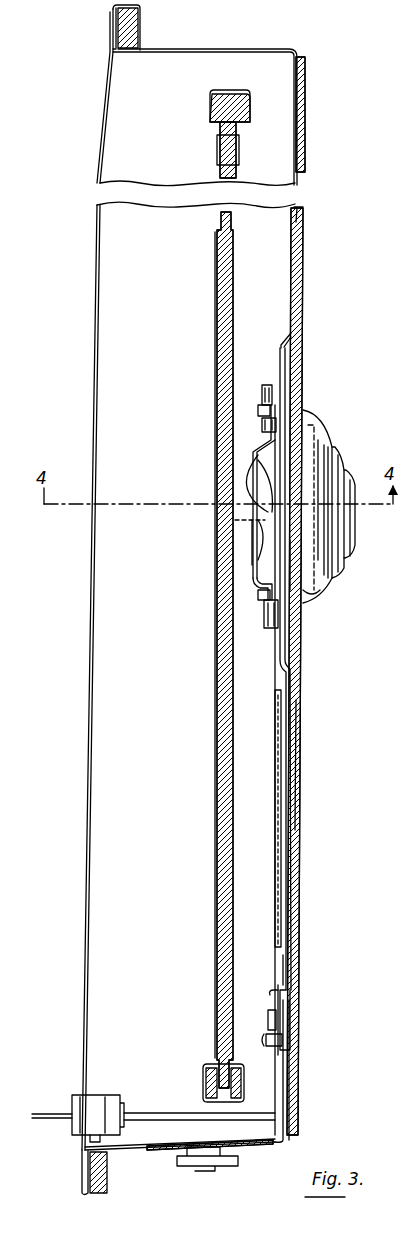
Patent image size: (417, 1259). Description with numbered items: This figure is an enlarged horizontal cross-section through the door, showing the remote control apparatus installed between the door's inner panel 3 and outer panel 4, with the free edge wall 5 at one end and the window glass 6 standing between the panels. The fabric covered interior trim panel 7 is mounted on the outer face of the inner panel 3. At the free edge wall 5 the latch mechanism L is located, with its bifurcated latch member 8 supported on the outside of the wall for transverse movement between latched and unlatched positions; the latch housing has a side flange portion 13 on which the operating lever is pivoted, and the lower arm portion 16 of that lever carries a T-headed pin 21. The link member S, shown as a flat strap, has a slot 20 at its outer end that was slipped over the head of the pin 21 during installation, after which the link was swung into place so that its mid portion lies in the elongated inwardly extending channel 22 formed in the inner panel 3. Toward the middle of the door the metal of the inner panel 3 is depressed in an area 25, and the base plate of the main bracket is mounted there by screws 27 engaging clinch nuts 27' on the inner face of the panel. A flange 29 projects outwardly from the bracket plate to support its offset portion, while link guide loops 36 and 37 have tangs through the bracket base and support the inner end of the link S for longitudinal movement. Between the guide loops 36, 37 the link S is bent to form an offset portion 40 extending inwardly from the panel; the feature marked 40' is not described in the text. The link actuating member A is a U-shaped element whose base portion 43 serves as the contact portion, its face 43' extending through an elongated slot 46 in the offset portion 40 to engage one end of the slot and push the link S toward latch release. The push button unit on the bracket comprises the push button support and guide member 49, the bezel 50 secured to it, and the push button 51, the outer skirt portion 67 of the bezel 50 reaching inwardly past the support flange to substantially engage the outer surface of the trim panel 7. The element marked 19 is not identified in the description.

The inner panel 3 is at (291, 293).
The outer panel 4 is at (88, 385).
The free edge wall 5 is at (286, 205).
The window glass 6 is at (219, 313).
The interior trim panel 7 is at (298, 762).
The latch member 8 is at (215, 1166).
The side flange portion 13 is at (272, 1092).
The lower arm portion 16 is at (270, 1012).
The control knob 19 is at (80, 1097).
The slot 20 is at (280, 1018).
The T-headed pin 21 is at (284, 1040).
The channel 22 is at (278, 845).
The depressed area 25 is at (282, 656).
The screws 27 is at (223, 513).
The clinch nuts 27' is at (226, 513).
The flange 29 is at (290, 565).
The link guide loop 36 is at (268, 622).
The link guide loop 37 is at (270, 395).
The offset portion 40 is at (225, 574).
The channel bracket flange 40' is at (207, 491).
The base portion 43 is at (224, 486).
The face 43' is at (217, 474).
The elongated slot 46 is at (212, 520).
The push button support and guide member 49 is at (345, 468).
The bezel 50 is at (333, 445).
The push button 51 is at (355, 483).
The outer skirt portion 67 is at (320, 590).
The link actuating member A is at (252, 538).
The link member S is at (279, 965).
The latch mechanism L is at (175, 1138).